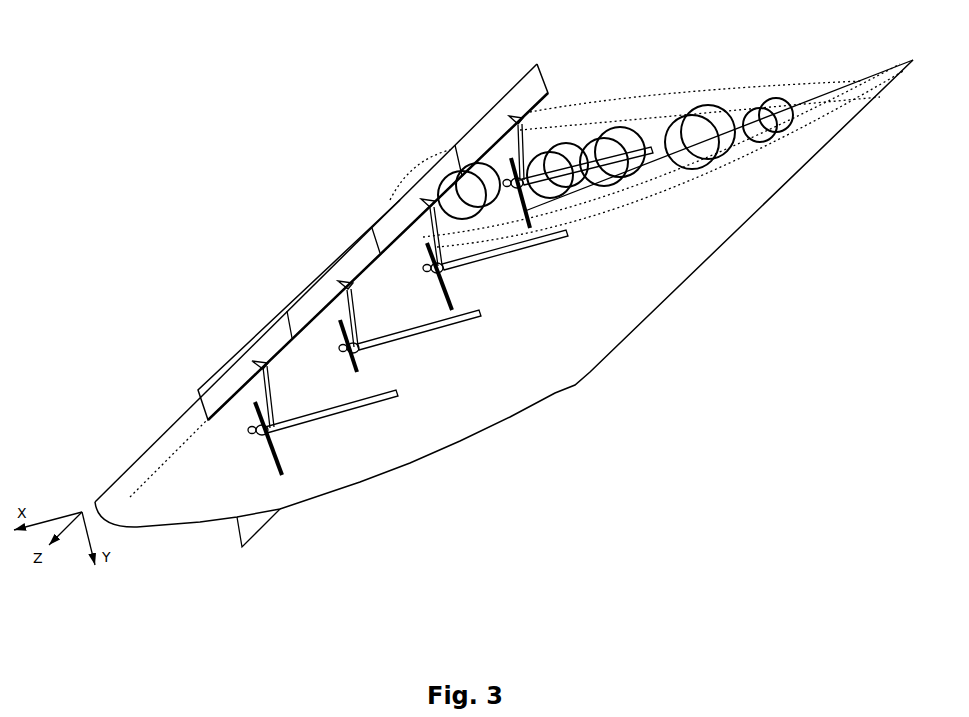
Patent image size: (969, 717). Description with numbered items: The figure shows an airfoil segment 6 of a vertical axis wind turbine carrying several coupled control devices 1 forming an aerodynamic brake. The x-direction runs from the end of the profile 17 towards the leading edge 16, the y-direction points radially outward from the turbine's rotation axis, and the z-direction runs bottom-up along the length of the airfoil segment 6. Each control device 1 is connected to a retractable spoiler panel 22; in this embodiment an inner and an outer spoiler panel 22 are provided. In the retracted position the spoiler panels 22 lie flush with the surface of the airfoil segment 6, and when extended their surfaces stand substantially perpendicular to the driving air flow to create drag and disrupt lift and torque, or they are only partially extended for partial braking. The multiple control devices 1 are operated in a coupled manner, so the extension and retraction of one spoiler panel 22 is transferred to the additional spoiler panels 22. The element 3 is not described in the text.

The control device 1 is at (519, 187).
The propeller blade 3 is at (515, 250).
The airfoil segment 6 is at (640, 60).
The leading edge 16 is at (157, 427).
The end of the profile 17 is at (583, 336).
The spoiler panel 22 is at (238, 363).